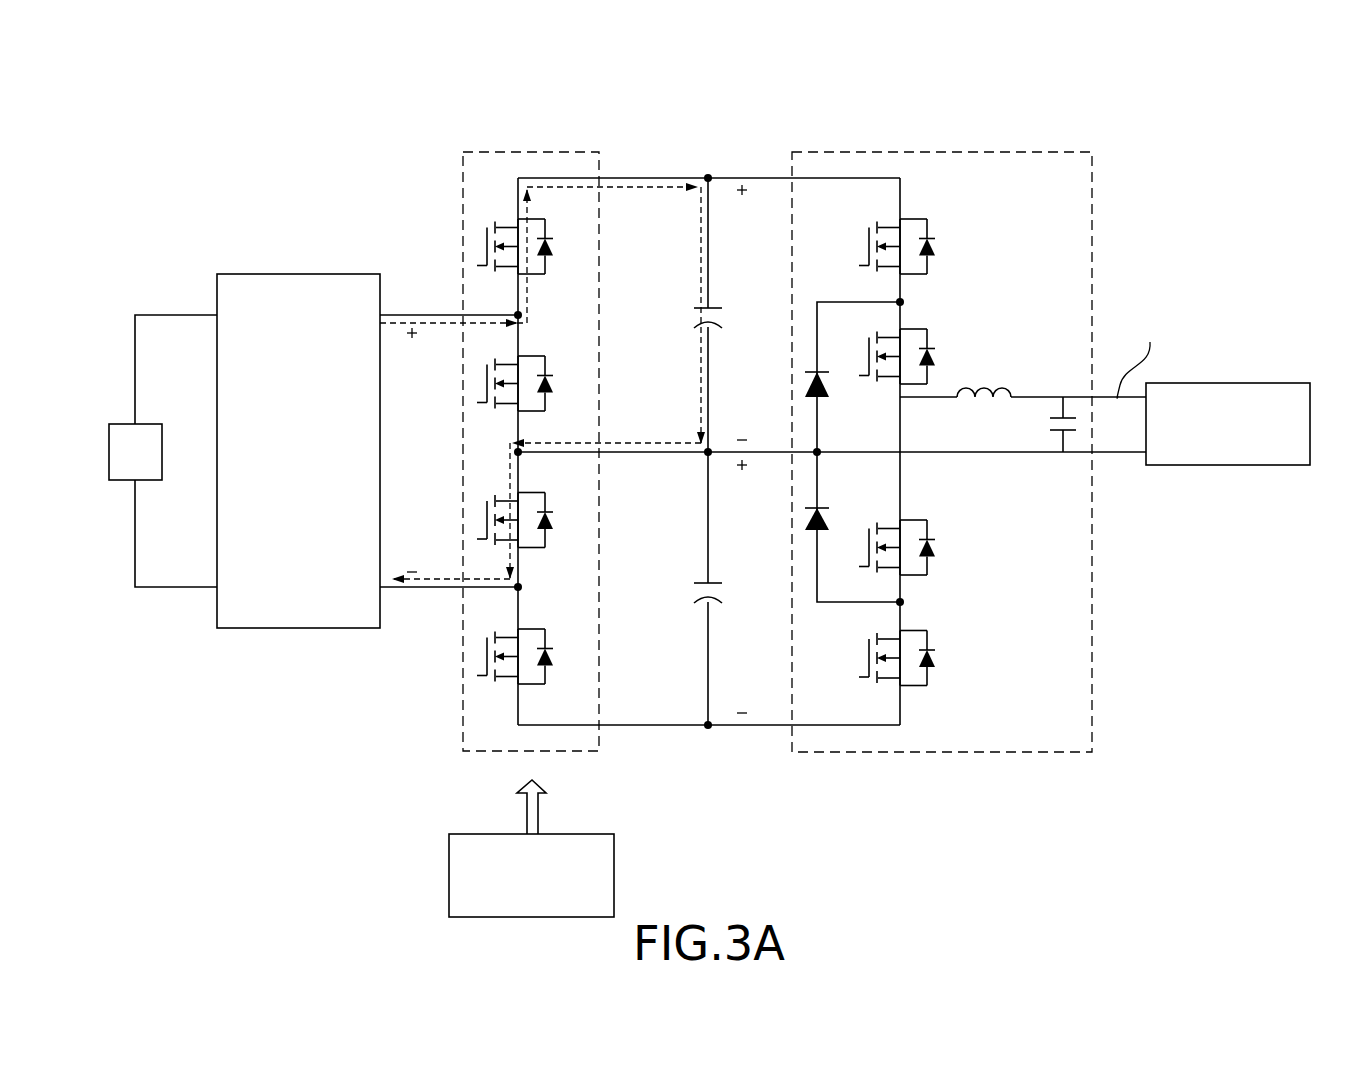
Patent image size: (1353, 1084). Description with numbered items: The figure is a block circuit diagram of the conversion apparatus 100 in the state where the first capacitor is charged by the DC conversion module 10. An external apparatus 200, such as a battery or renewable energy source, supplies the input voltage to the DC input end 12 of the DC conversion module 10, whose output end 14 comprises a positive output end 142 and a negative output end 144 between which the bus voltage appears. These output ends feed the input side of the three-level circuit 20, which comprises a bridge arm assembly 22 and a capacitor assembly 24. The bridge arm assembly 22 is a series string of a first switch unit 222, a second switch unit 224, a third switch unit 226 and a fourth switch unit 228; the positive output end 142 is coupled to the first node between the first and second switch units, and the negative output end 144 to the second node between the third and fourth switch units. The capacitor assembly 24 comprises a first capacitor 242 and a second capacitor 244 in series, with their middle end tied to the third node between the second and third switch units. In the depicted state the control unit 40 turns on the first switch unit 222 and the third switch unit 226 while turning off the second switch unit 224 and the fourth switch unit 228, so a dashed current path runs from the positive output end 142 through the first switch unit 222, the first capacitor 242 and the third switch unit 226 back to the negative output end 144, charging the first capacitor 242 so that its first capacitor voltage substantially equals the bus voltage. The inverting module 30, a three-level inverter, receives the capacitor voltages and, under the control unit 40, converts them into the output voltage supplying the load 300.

The conversion apparatus 100 is at (725, 68).
The DC conversion module 10 is at (298, 278).
The DC input end 12 is at (176, 315).
The output end 14 is at (428, 420).
The positive output end 142 is at (448, 314).
The negative output end 144 is at (448, 588).
The three-level circuit 20 is at (520, 130).
The bridge arm assembly 22 is at (585, 434).
The first switch unit 222 is at (553, 247).
The second switch unit 224 is at (553, 384).
The third switch unit 226 is at (553, 520).
The fourth switch unit 228 is at (553, 657).
The capacitor assembly 24 is at (719, 416).
The first capacitor 242 is at (695, 316).
The second capacitor 244 is at (695, 589).
The inverting module 30 is at (945, 152).
The control unit 40 is at (558, 842).
The external apparatus 200 is at (125, 430).
The load 300 is at (1228, 388).